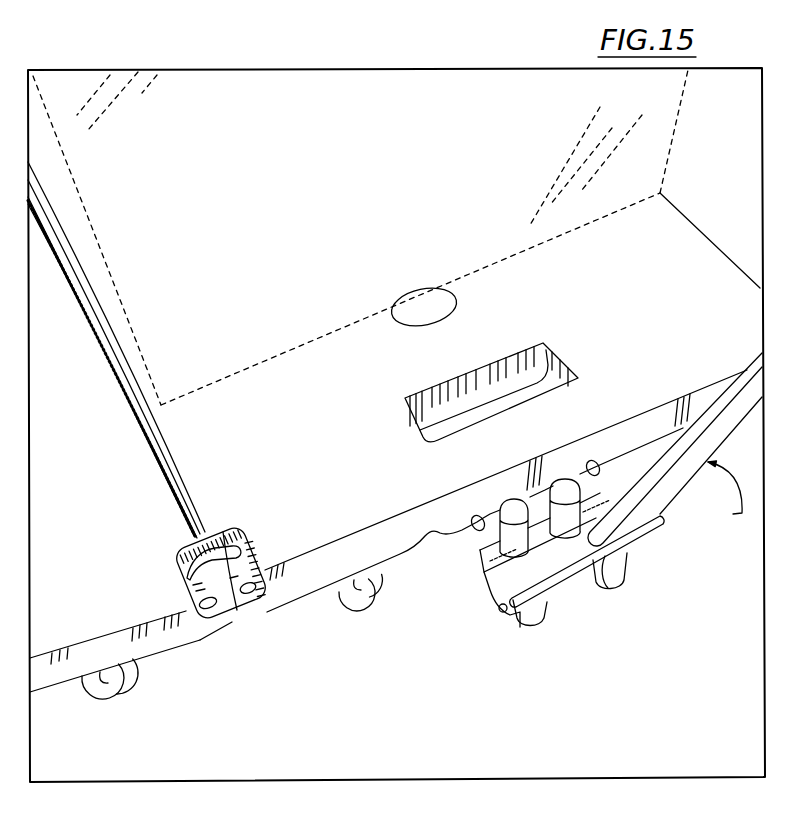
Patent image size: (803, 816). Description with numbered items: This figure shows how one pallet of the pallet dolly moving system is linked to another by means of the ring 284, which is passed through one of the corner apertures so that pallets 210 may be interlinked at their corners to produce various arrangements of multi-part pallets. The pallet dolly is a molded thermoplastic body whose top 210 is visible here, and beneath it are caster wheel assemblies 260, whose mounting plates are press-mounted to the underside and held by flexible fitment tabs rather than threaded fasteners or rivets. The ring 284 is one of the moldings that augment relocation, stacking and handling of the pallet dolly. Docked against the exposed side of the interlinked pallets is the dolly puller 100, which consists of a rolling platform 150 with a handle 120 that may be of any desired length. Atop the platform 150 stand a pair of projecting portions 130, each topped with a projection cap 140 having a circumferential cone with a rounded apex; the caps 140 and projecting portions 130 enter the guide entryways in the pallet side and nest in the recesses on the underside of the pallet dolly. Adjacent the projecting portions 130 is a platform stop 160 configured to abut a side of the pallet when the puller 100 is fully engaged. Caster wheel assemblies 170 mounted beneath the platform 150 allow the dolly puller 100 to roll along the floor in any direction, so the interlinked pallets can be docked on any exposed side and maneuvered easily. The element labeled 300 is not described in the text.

The dolly puller 100 is at (589, 531).
The handle 120 is at (660, 488).
The projecting portions 130 is at (510, 569).
The projection cap 140 is at (567, 490).
The rolling platform 150 is at (498, 602).
The platform stop 160 is at (637, 532).
The caster wheel assemblies 170 is at (622, 588).
The top 210 is at (367, 424).
The caster wheel assemblies 260 is at (107, 696).
The ring 284 is at (236, 524).
The table top 300 is at (394, 258).